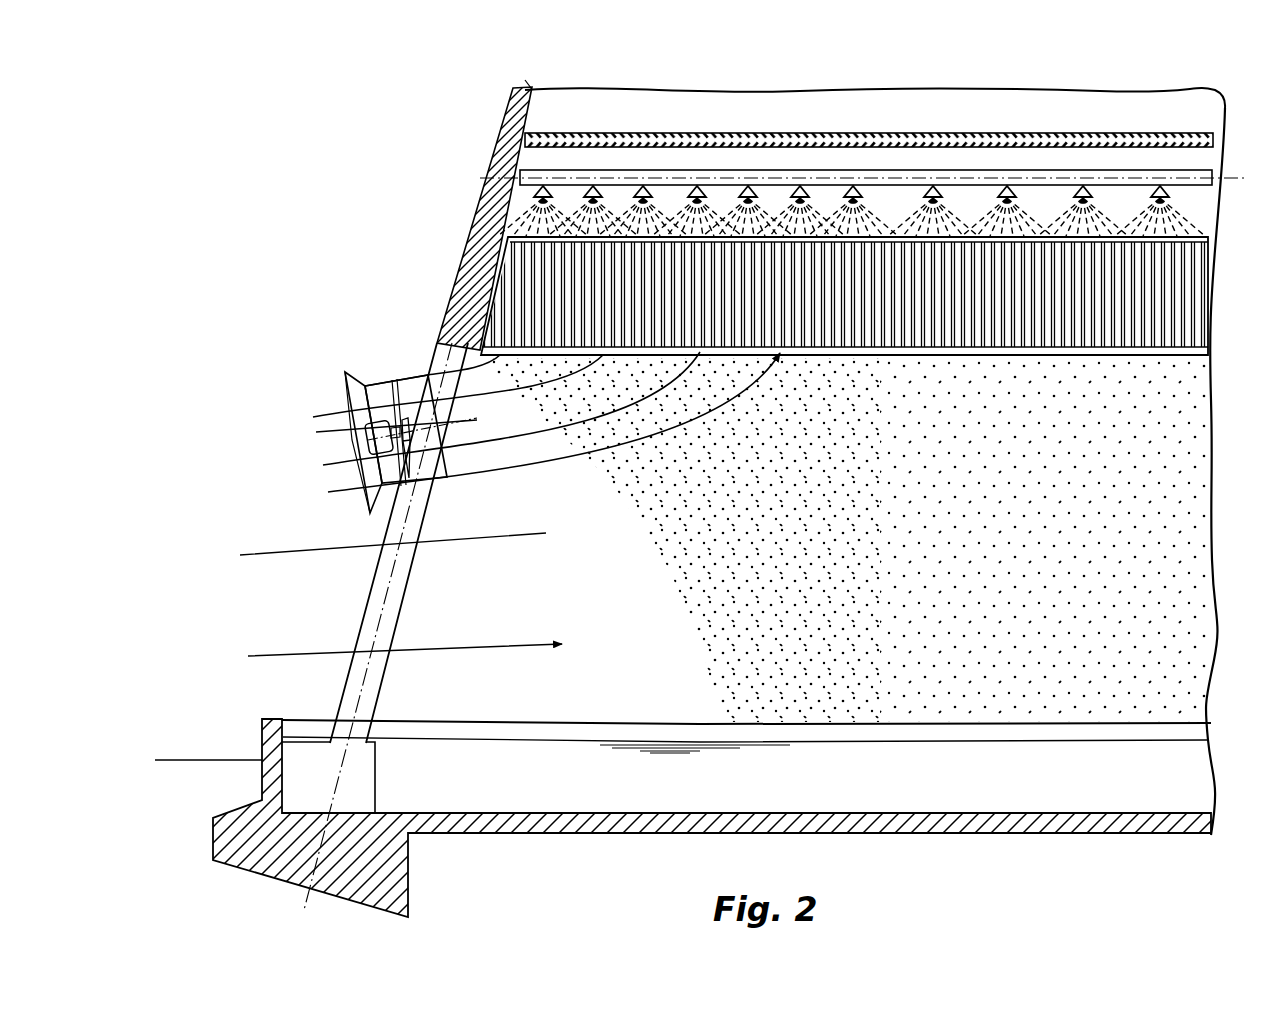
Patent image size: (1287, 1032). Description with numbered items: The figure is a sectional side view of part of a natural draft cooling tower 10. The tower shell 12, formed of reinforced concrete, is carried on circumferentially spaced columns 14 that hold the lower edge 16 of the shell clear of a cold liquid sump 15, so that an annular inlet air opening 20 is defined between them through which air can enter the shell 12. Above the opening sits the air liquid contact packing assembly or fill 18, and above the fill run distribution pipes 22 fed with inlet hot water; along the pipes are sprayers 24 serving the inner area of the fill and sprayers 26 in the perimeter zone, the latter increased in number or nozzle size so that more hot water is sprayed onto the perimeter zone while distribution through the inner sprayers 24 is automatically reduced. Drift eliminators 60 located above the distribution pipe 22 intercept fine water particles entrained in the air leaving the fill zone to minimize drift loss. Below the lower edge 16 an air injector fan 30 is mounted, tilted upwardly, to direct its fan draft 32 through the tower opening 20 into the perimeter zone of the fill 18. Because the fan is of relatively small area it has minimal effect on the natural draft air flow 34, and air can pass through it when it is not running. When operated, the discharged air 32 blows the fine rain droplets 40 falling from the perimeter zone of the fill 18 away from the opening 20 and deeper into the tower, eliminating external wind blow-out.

The natural draft cooling tower 10 is at (486, 116).
The tower shell 12 is at (468, 232).
The columns 14 is at (362, 620).
The cold liquid sump 15 is at (1035, 777).
The lower edge 16 is at (1062, 355).
The air liquid contact packing assembly 18 is at (925, 288).
The annular inlet air opening 20 is at (304, 604).
The distribution pipes 22 is at (1038, 168).
The sprayers 24 is at (1007, 182).
The sprayers 26 is at (644, 182).
The air injector fans 30 is at (405, 380).
The fan draft 32 is at (330, 478).
The air flow 34 is at (500, 645).
The fine rain droplets 40 is at (668, 455).
The drift eliminators 60 is at (803, 134).